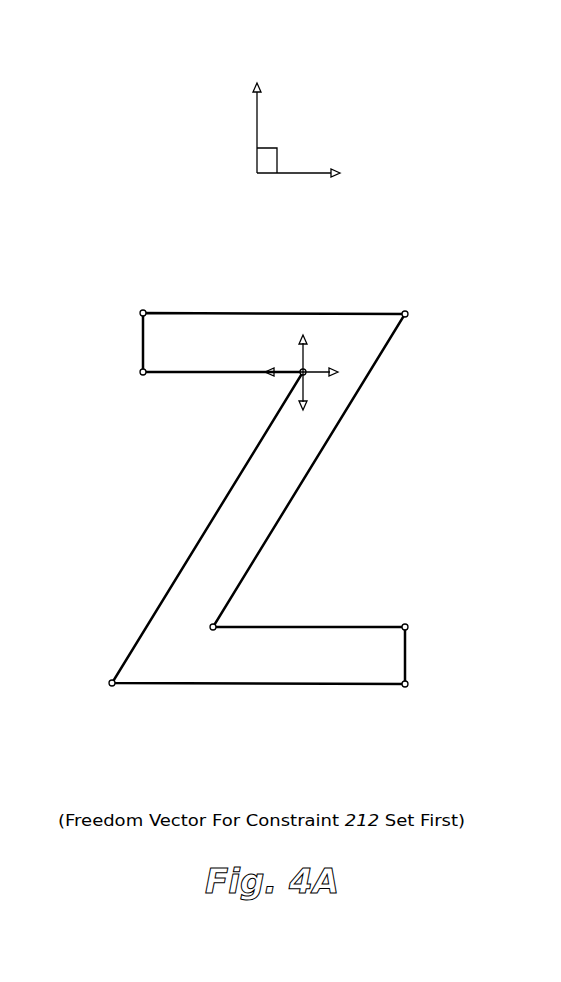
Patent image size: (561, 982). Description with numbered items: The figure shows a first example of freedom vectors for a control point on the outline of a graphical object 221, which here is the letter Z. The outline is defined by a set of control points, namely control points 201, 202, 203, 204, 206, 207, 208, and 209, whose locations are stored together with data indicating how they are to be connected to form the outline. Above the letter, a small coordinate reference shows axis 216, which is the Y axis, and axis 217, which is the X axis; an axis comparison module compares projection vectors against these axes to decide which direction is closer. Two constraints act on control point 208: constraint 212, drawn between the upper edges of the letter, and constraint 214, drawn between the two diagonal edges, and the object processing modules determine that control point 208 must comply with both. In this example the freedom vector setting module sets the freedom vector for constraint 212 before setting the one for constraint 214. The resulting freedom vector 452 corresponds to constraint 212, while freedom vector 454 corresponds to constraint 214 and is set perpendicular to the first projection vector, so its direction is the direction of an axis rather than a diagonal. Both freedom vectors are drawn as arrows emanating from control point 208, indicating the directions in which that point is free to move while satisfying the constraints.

The control point 201 is at (143, 313).
The control point 202 is at (405, 314).
The control point 203 is at (213, 627).
The control point 204 is at (405, 627).
The control point 206 is at (405, 684).
The control point 207 is at (112, 683).
The control point 208 is at (303, 372).
The control point 209 is at (143, 372).
The constraint 212 is at (300, 368).
The constraint 214 is at (283, 412).
The axis 216 is at (257, 113).
The axis 217 is at (330, 175).
The graphical object 221 is at (368, 720).
The freedom vector 452 is at (306, 380).
The freedom vector 454 is at (308, 370).